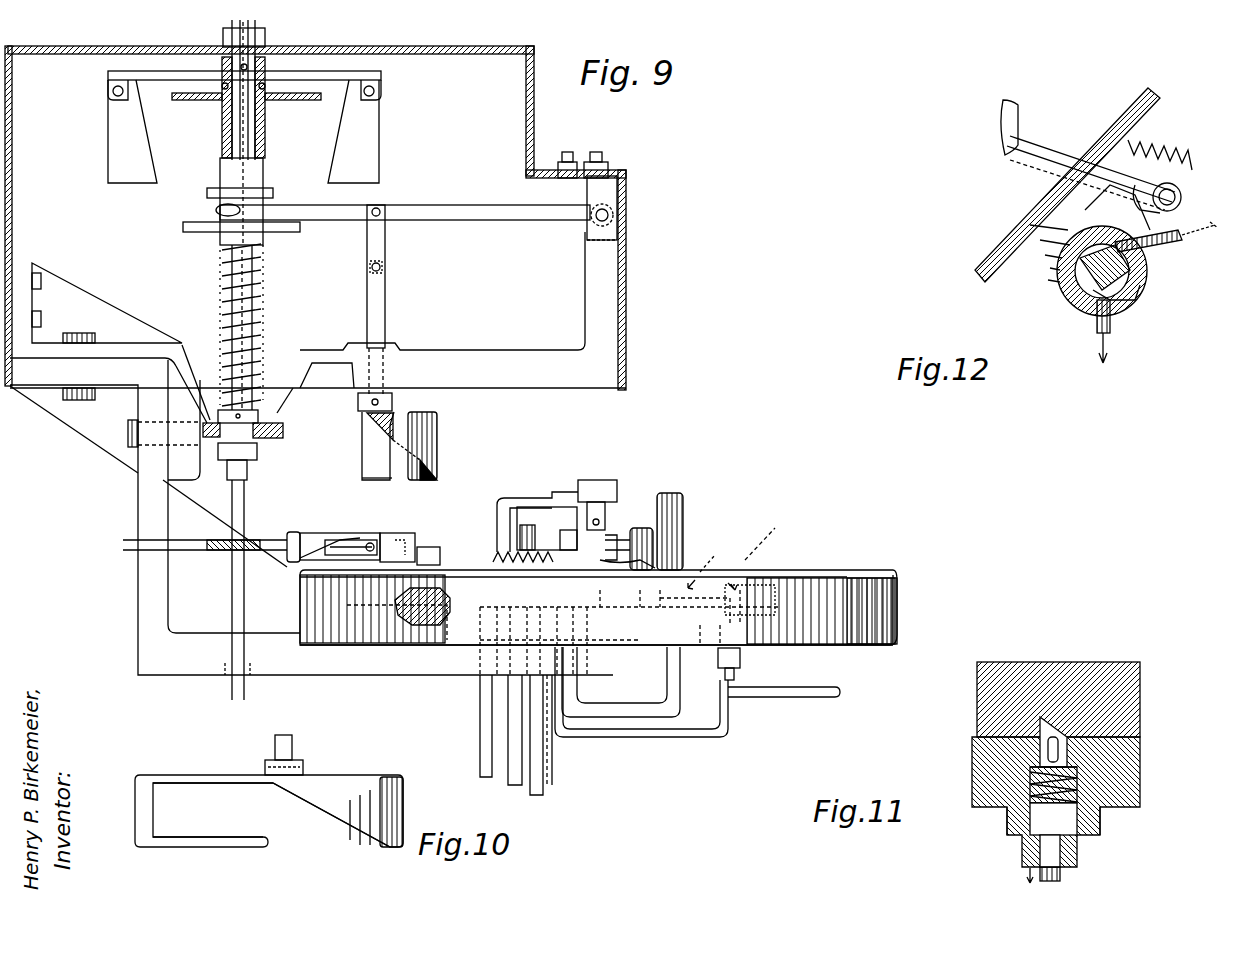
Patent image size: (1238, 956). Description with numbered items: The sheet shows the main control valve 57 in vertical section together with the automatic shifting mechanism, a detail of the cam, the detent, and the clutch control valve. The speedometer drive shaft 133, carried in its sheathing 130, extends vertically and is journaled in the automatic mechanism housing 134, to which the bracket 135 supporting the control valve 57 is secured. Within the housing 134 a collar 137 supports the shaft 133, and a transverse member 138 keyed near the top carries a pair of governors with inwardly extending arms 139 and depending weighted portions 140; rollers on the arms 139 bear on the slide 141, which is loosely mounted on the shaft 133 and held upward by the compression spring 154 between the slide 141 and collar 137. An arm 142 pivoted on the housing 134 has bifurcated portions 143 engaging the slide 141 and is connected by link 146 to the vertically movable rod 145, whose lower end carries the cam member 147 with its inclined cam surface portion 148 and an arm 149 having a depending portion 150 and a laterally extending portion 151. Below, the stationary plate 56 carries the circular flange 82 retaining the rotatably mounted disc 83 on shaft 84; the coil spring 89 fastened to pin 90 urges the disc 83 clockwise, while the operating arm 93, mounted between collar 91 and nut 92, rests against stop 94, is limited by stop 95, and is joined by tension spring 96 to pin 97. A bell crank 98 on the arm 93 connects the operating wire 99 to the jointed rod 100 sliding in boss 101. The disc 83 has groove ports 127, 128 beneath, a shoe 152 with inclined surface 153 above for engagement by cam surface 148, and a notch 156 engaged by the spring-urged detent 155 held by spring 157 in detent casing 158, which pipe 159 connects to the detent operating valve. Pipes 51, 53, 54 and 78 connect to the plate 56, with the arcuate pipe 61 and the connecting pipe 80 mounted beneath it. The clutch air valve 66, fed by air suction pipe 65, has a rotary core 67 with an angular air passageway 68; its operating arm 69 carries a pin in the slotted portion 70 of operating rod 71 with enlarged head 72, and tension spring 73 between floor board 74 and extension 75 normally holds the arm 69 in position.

In FIG. 9, the automatic mechanism housing 134 is at (536, 115).
In FIG. 9, the arm 142 is at (484, 210).
In FIG. 9, the link 146 is at (384, 243).
In FIG. 9, the vertically movable rod 145 is at (385, 312).
In FIG. 10, the vertically movable rod 145 is at (290, 745).
In FIG. 9, the arm 149 is at (360, 410).
In FIG. 10, the arm 149 is at (207, 778).
In FIG. 9, the speedometer drive shaft 133 is at (230, 265).
In FIG. 9, the slide 141 is at (222, 172).
In FIG. 9, the transverse member 138 is at (150, 72).
In FIG. 9, the inwardly extending arms 139 is at (172, 96).
In FIG. 9, the depending weighted portions 140 is at (243, 131).
In FIG. 9, the bifurcated portions 143 is at (290, 212).
In FIG. 9, the compression spring 154 is at (262, 296).
In FIG. 9, the collar 137 is at (270, 436).
In FIG. 9, the bracket 135 is at (145, 618).
In FIG. 9, the sheathing 130 is at (225, 690).
In FIG. 9, the cam member 147 is at (412, 418).
In FIG. 10, the cam member 147 is at (345, 768).
In FIG. 9, the inclined cam surface portion 148 is at (437, 465).
In FIG. 10, the inclined cam surface portion 148 is at (330, 822).
In FIG. 9, the depending portion 150 is at (412, 433).
In FIG. 10, the depending portion 150 is at (150, 806).
In FIG. 9, the laterally extending portion 151 is at (366, 482).
In FIG. 10, the laterally extending portion 151 is at (210, 845).
In FIG. 9, the operating wire 99 is at (195, 548).
In FIG. 9, the stop 94 is at (322, 532).
In FIG. 9, the bell crank 98 is at (302, 560).
In FIG. 9, the jointed rod 100 is at (365, 540).
In FIG. 9, the laterally extending boss 101 is at (400, 534).
In FIG. 9, the stop 95 is at (435, 547).
In FIG. 9, the stationary plate 56 is at (865, 645).
In FIG. 11, the stationary plate 56 is at (1137, 765).
In FIG. 9, the rotatably mounted disc 83 is at (800, 573).
In FIG. 11, the rotatably mounted disc 83 is at (1120, 667).
In FIG. 9, the flange 82 is at (870, 578).
In FIG. 9, the main control valve 57 is at (910, 600).
In FIG. 9, the groove port 127 is at (716, 565).
In FIG. 9, the groove port 128 is at (767, 551).
In FIG. 9, the notch 156 is at (440, 595).
In FIG. 11, the notch 156 is at (1066, 718).
In FIG. 9, the pin 97 is at (545, 565).
In FIG. 9, the operating arm 93 is at (524, 498).
In FIG. 9, the tension spring 96 is at (541, 528).
In FIG. 9, the coil spring 89 is at (568, 535).
In FIG. 9, the shaft 84 is at (598, 480).
In FIG. 9, the nut 92 is at (612, 492).
In FIG. 9, the pin 90 is at (638, 540).
In FIG. 9, the shoe 152 is at (662, 493).
In FIG. 9, the collar 91 is at (617, 522).
In FIG. 9, the diagonally inclined surface 153 is at (655, 565).
In FIG. 9, the detent casing 158 is at (742, 665).
In FIG. 11, the detent casing 158 is at (1080, 848).
In FIG. 9, the pipe 159 is at (782, 693).
In FIG. 11, the pipe 159 is at (1062, 877).
In FIG. 9, the arcuate pipe 61 is at (670, 690).
In FIG. 9, the connecting pipe 80 is at (640, 733).
In FIG. 9, the pipe 53 is at (480, 735).
In FIG. 9, the pipe 78 is at (510, 785).
In FIG. 12, the pipe 78 is at (1180, 245).
In FIG. 9, the pipe 51 is at (548, 795).
In FIG. 9, the pipe 54 is at (553, 765).
In FIG. 11, the detent 155 is at (1043, 748).
In FIG. 11, the spring 157 is at (1100, 817).
In FIG. 12, the floor board 74 is at (1128, 100).
In FIG. 12, the operating rod 71 is at (1050, 140).
In FIG. 12, the enlarged head 72 is at (1000, 128).
In FIG. 12, the tension spring 73 is at (1150, 140).
In FIG. 12, the slotted portion 70 is at (1165, 168).
In FIG. 12, the extension 75 is at (1180, 180).
In FIG. 12, the operating arm 69 is at (1182, 205).
In FIG. 12, the clutch air valve 66 is at (1058, 290).
In FIG. 12, the rotary core 67 is at (1140, 280).
In FIG. 12, the angular air passageway 68 is at (1125, 300).
In FIG. 12, the air suction pipe 65 is at (1112, 325).